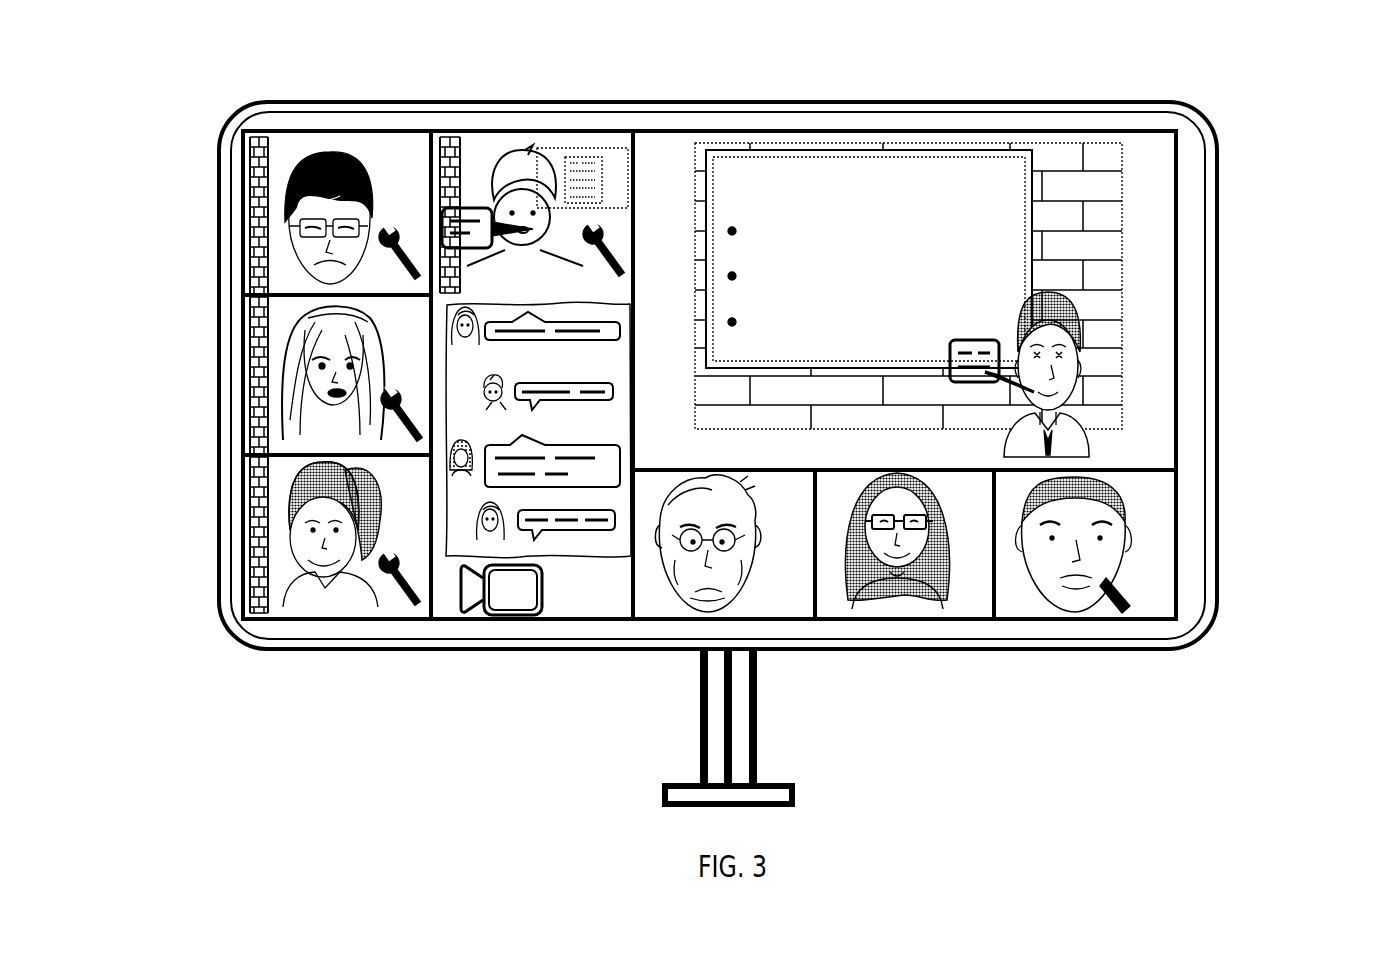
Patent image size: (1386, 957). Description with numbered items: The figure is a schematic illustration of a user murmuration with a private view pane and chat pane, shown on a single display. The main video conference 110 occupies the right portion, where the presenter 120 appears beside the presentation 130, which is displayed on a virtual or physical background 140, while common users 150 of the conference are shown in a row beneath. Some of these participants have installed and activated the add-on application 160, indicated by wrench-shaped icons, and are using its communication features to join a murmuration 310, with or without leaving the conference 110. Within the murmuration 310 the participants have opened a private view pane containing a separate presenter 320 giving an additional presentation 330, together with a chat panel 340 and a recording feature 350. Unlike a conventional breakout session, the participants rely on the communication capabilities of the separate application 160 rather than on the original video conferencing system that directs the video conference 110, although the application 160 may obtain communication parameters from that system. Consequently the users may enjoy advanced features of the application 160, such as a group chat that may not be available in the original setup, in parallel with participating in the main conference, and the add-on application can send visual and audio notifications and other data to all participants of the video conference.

The video conference 110 is at (1215, 137).
The presenter 120 is at (1077, 400).
The presentation 130 is at (728, 157).
The background 140 is at (1087, 255).
The common users 150 is at (945, 578).
The add-on application 160 is at (395, 240).
The murmuration 310 is at (257, 205).
The separate presenter 320 is at (508, 146).
The additional presentation 330 is at (583, 150).
The chat panel 340 is at (565, 560).
The recording feature 350 is at (488, 618).